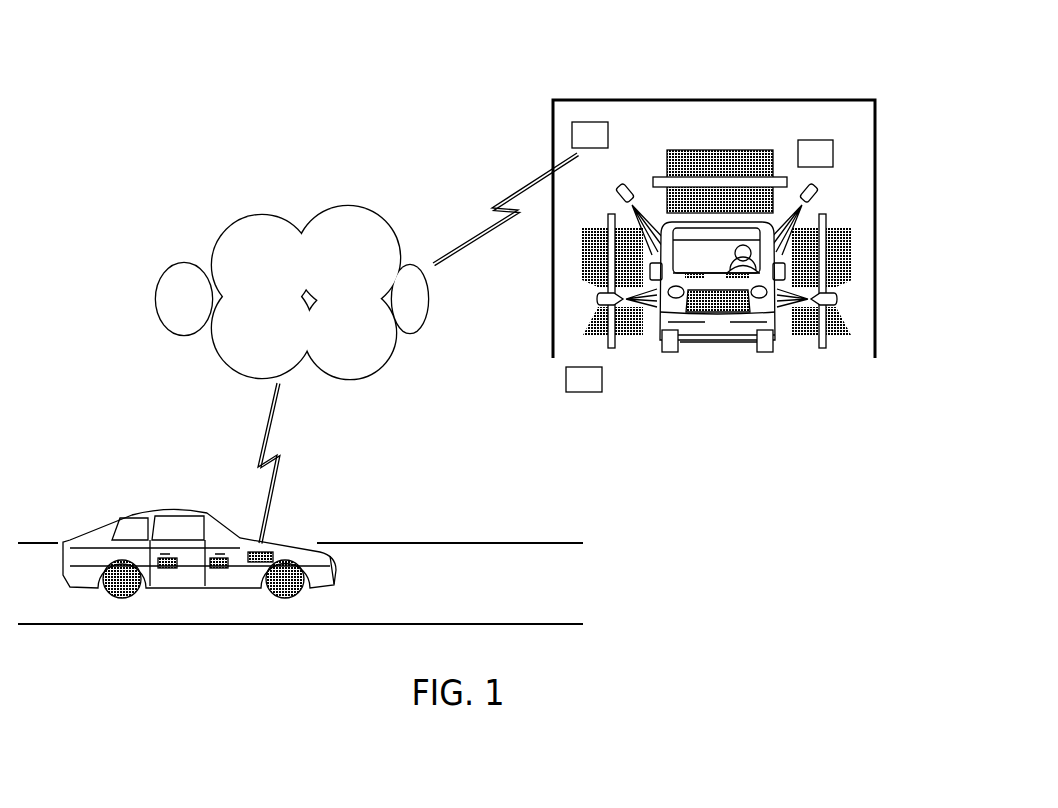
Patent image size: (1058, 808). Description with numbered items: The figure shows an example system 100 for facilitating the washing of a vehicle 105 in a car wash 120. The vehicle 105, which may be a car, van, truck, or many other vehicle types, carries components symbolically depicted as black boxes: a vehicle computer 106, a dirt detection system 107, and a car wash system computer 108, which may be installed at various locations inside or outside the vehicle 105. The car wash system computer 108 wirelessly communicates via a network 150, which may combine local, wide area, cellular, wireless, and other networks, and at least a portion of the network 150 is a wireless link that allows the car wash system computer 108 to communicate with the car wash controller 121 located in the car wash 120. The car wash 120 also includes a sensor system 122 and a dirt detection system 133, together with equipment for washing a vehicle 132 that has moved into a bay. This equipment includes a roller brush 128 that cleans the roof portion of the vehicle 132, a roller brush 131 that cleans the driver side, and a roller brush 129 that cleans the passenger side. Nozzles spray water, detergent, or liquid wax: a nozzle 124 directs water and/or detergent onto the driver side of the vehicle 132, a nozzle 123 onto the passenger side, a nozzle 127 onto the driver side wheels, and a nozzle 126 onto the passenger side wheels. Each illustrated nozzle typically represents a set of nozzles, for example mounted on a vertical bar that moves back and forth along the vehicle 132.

The system 100 is at (742, 598).
The vehicle 105 is at (112, 503).
The vehicle computer 106 is at (222, 572).
The dirt detection system 107 is at (168, 572).
The car wash system computer 108 is at (263, 548).
The car wash 120 is at (890, 80).
The car wash controller 121 is at (579, 144).
The sensor system 122 is at (804, 162).
The nozzle 123 is at (617, 190).
The nozzle 124 is at (818, 190).
The nozzle 126 is at (604, 306).
The nozzle 127 is at (830, 306).
The roller brush 128 is at (700, 147).
The roller brush 129 is at (628, 340).
The roller brush 131 is at (805, 341).
The vehicle 132 is at (712, 353).
The dirt detection system 133 is at (573, 388).
The network 150 is at (291, 285).